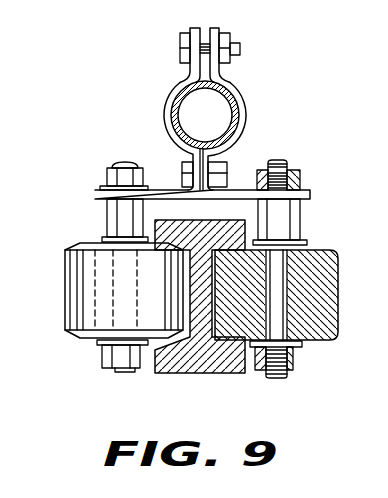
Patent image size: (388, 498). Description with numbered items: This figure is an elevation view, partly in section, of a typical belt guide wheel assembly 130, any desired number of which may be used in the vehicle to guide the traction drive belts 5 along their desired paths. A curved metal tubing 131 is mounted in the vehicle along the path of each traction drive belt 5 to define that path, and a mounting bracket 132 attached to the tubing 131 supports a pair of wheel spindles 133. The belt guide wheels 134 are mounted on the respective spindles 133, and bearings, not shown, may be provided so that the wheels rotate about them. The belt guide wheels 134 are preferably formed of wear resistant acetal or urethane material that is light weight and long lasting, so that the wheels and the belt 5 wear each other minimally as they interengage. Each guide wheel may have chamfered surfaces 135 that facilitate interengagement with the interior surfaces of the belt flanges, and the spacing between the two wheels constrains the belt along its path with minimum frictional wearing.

The traction drive belt 5 is at (148, 372).
The belt guide wheel assembly 130 is at (88, 185).
The curved metal tubing 131 is at (185, 88).
The mounting bracket 132 is at (165, 108).
The wheel spindle 133 is at (131, 162).
The belt guide wheel 134 is at (65, 293).
The chamfered surface 135 is at (80, 246).